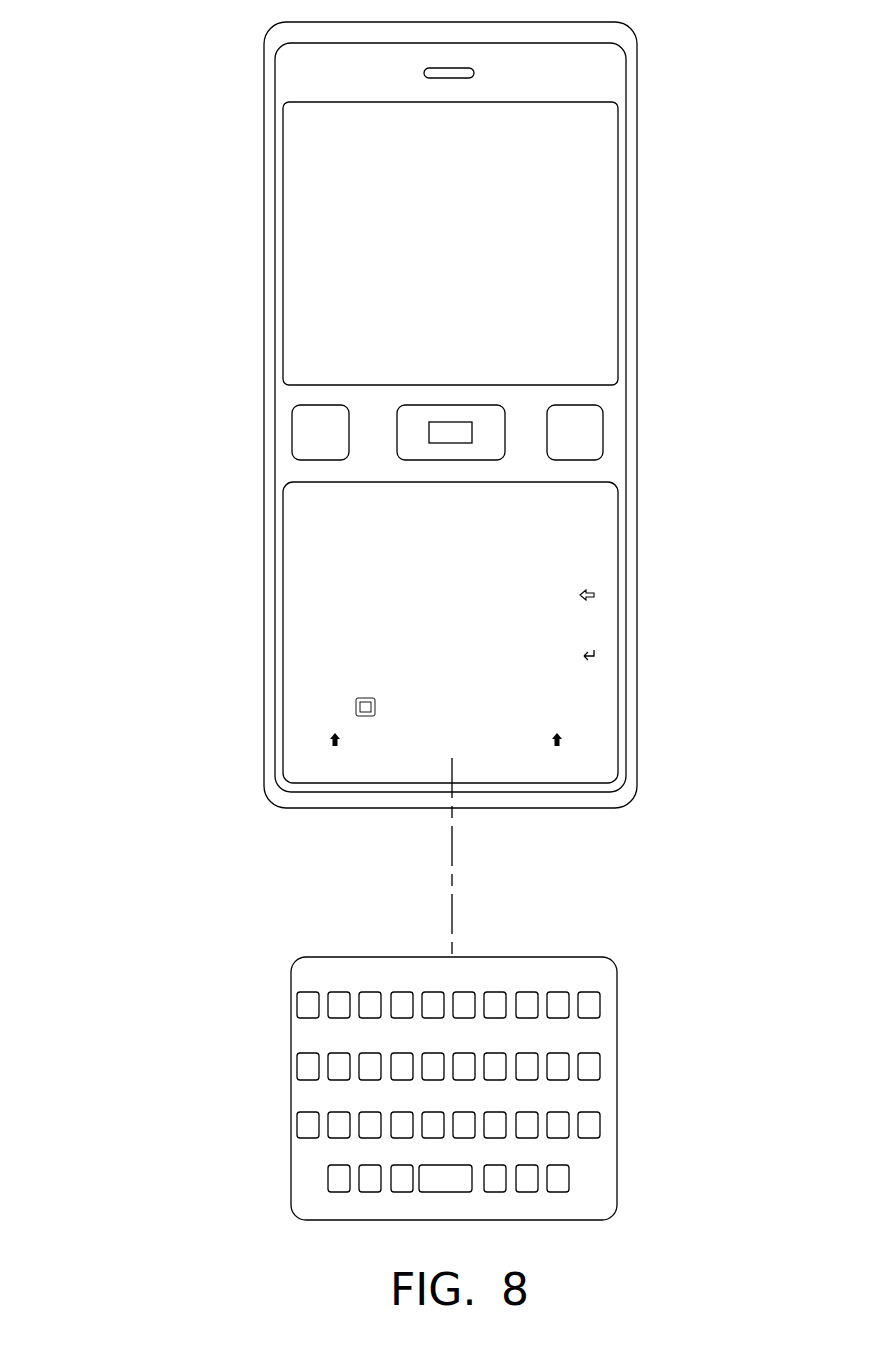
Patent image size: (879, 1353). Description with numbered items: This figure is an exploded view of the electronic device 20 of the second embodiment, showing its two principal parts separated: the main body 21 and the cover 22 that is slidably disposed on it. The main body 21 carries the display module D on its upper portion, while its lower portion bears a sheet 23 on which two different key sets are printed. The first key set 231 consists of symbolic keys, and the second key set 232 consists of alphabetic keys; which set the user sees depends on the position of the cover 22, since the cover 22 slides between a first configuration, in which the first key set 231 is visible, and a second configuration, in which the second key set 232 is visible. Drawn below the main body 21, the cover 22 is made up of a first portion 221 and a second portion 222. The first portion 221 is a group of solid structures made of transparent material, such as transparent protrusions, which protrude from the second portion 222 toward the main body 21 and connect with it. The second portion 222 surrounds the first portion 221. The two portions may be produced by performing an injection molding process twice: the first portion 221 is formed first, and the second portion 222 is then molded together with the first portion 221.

The electronic device 20 is at (75, 43).
The main body 21 is at (612, 86).
The display module D is at (585, 195).
The sheet 23 is at (450, 632).
The first key set 231 is at (332, 530).
The second key set 232 is at (594, 558).
The cover 22 is at (538, 1088).
The first portion 221 is at (600, 1005).
The second portion 222 is at (600, 1030).